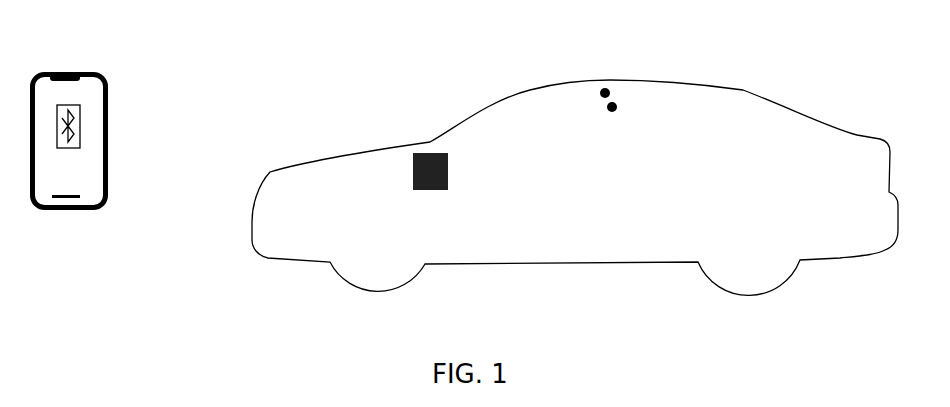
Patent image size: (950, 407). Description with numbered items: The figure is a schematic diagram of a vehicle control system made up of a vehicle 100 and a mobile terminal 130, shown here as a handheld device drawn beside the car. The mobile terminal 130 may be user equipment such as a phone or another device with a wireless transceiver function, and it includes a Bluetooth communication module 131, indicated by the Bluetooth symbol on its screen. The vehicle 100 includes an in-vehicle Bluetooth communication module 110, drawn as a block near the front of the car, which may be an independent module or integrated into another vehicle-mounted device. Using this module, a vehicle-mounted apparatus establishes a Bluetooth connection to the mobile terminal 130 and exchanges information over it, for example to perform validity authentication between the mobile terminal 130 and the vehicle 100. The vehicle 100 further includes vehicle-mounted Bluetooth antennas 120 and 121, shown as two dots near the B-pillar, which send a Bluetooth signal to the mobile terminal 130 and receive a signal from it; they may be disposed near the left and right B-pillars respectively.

The vehicle 100 is at (575, 187).
The in-vehicle Bluetooth communication module 110 is at (430, 152).
The vehicle-mounted Bluetooth antenna 120 is at (606, 87).
The vehicle-mounted Bluetooth antenna 121 is at (613, 101).
The mobile terminal 130 is at (70, 72).
The Bluetooth communication module 131 is at (80, 105).